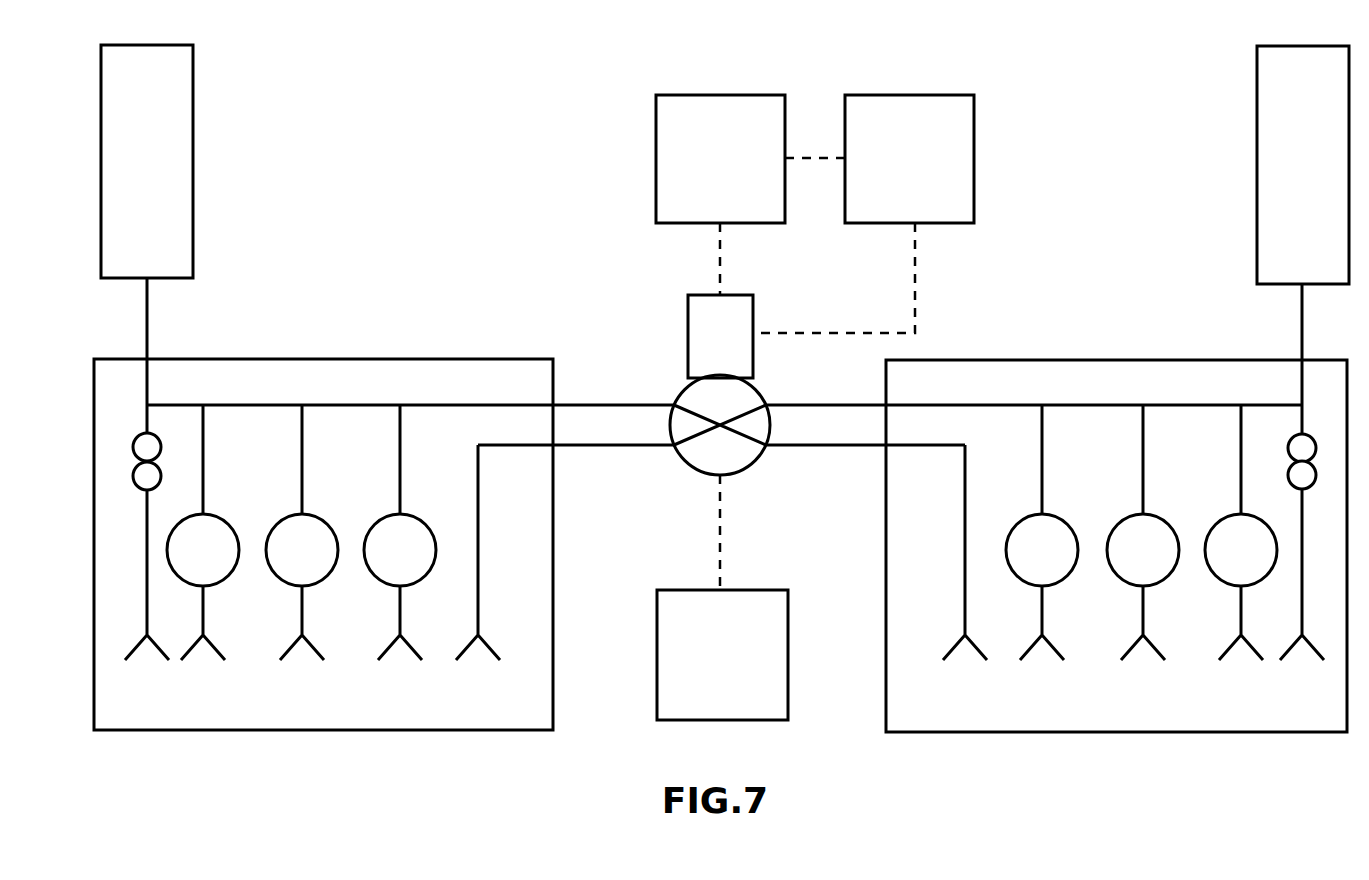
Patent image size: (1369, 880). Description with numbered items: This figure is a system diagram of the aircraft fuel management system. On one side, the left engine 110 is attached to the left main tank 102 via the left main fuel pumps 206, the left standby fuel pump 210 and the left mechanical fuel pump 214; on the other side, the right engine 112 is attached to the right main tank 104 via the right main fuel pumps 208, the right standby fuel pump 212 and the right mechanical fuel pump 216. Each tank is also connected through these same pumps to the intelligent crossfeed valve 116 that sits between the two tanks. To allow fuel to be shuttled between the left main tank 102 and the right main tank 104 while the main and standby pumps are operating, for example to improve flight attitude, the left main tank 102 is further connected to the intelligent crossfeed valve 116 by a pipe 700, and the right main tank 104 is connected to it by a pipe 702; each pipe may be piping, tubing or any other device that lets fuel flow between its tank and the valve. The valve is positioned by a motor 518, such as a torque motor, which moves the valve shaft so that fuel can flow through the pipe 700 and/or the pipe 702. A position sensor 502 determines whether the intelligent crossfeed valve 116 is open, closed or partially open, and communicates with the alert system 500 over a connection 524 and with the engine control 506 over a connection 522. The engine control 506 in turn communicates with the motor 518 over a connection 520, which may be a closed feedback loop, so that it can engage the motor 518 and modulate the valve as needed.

The left engine 110 is at (147, 352).
The right engine 112 is at (1303, 353).
The left main tank 102 is at (323, 544).
The right main tank 104 is at (1116, 546).
The left mechanical fuel pump 214 is at (162, 448).
The right mechanical fuel pump 216 is at (1288, 446).
The left standby fuel pump 210 is at (203, 532).
The left main fuel pumps 206 is at (351, 532).
The right main fuel pumps 208 is at (1092, 532).
The right standby fuel pump 212 is at (1241, 532).
The pipe 700 is at (481, 567).
The pipe 702 is at (963, 570).
The intelligent crossfeed valve 116 is at (681, 396).
The motor 518 is at (720, 300).
The position sensor 502 is at (720, 159).
The engine control 506 is at (909, 159).
The alert system 500 is at (722, 655).
The connection 522 is at (803, 160).
The connection 520 is at (917, 312).
The connection 524 is at (718, 563).